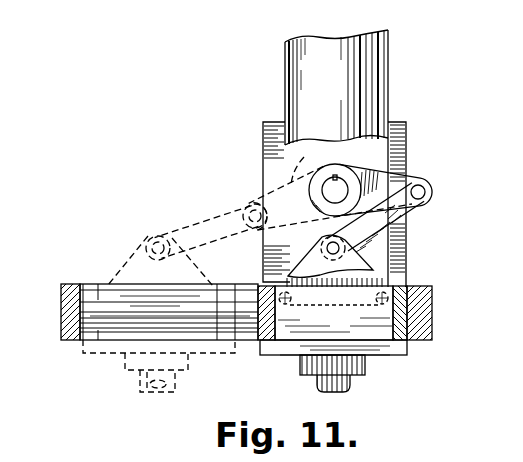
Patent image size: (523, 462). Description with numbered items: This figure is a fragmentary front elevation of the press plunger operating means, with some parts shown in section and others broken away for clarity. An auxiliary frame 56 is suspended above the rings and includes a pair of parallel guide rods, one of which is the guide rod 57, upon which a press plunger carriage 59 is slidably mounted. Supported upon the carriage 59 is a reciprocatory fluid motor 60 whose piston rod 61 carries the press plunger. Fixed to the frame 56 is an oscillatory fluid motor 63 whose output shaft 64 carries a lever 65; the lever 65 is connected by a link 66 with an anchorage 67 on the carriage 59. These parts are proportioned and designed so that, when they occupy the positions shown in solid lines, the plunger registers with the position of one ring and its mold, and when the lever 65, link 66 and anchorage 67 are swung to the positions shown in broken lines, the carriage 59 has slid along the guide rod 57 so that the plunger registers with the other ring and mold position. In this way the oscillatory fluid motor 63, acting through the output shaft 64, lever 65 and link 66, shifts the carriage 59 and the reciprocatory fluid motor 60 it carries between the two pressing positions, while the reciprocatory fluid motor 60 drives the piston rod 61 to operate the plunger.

The auxiliary frame 56 is at (432, 300).
The guide rod 57 is at (118, 302).
The press plunger carriage 59 is at (289, 334).
The reciprocatory fluid motor 60 is at (325, 67).
The piston rod 61 is at (350, 384).
The oscillatory fluid motor 63 is at (406, 130).
The output shaft 64 is at (336, 187).
The lever 65 is at (293, 183).
The link 66 is at (386, 223).
The anchorage 67 is at (360, 262).